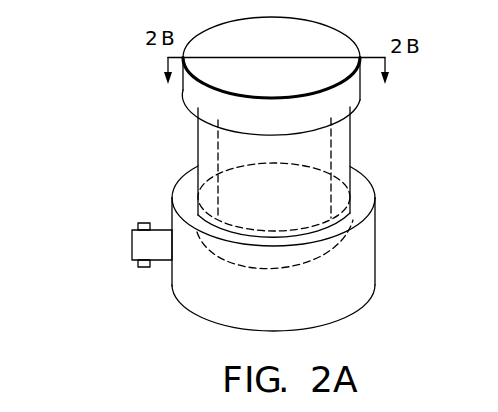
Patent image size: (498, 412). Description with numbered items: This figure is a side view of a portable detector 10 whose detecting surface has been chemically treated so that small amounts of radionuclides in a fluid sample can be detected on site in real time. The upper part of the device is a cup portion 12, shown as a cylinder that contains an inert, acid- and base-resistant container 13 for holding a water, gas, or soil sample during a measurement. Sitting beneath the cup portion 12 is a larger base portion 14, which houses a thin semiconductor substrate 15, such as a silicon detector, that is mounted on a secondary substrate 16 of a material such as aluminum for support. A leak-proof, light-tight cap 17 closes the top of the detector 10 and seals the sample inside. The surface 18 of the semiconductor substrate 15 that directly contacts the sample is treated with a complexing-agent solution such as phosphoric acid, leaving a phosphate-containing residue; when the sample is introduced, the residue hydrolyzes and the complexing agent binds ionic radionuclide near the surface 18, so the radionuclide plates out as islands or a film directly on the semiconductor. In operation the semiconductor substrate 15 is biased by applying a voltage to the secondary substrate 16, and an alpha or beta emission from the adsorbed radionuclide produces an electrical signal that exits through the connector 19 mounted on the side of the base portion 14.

The portable detector 10 is at (128, 54).
The cup portion 12 is at (371, 119).
The container 13 is at (340, 152).
The base portion 14 is at (363, 266).
The semiconductor substrate 15 is at (317, 228).
The secondary substrate 16 is at (320, 248).
The cap 17 is at (190, 89).
The surface 18 is at (246, 177).
The connector 19 is at (160, 253).